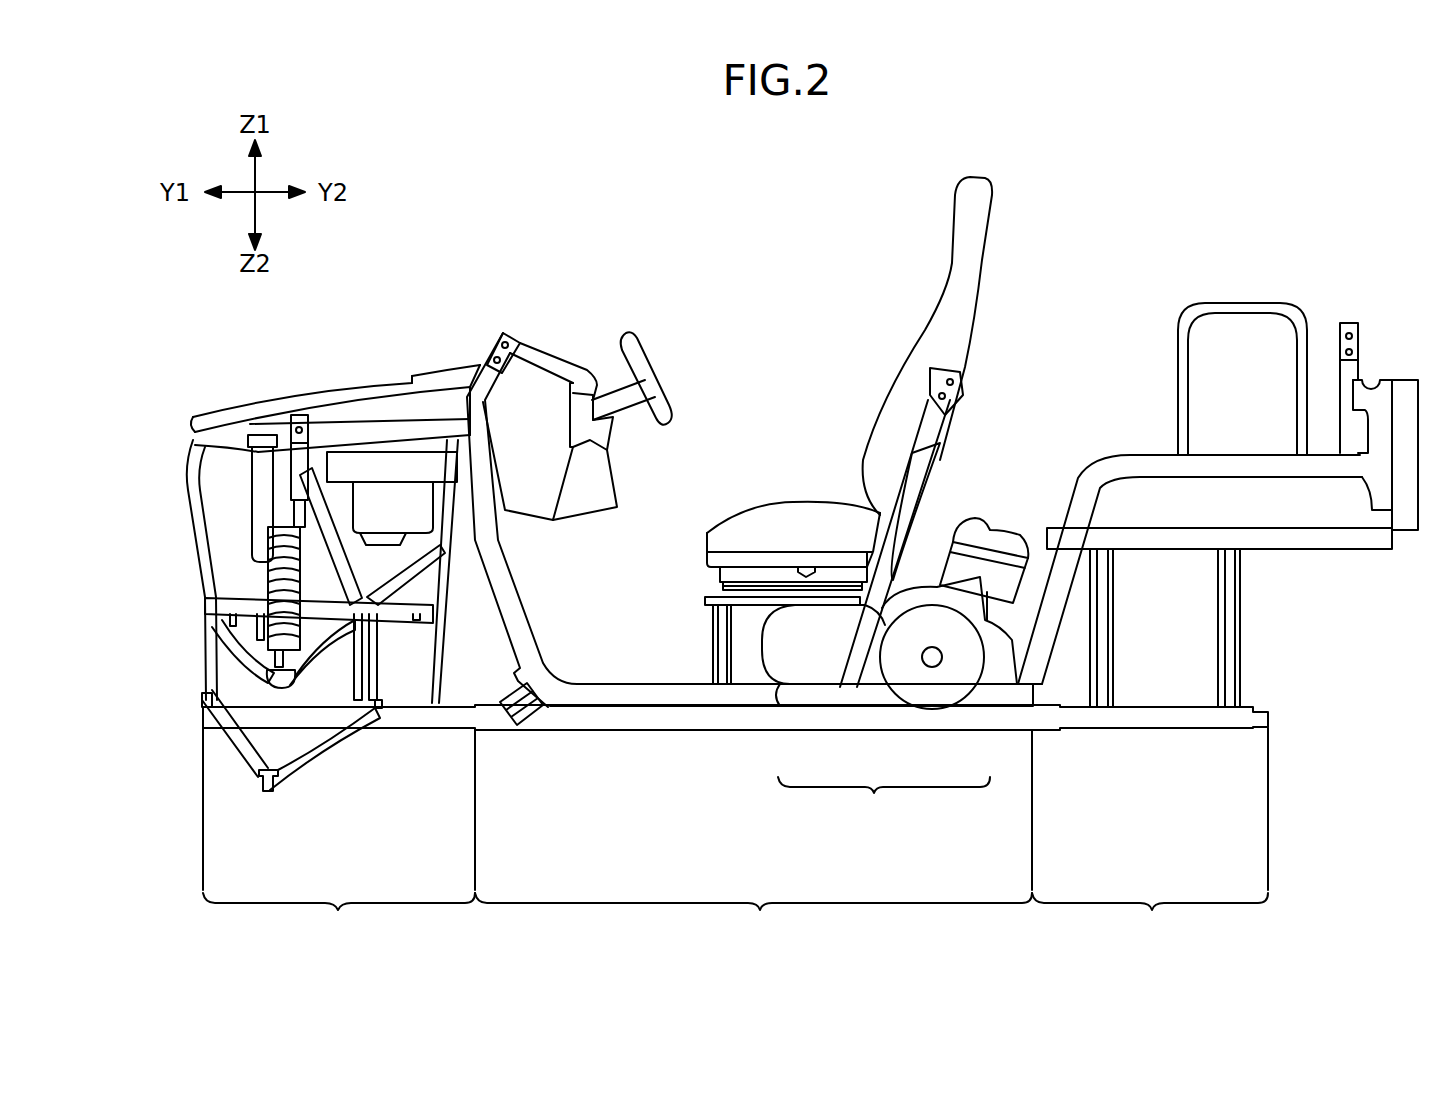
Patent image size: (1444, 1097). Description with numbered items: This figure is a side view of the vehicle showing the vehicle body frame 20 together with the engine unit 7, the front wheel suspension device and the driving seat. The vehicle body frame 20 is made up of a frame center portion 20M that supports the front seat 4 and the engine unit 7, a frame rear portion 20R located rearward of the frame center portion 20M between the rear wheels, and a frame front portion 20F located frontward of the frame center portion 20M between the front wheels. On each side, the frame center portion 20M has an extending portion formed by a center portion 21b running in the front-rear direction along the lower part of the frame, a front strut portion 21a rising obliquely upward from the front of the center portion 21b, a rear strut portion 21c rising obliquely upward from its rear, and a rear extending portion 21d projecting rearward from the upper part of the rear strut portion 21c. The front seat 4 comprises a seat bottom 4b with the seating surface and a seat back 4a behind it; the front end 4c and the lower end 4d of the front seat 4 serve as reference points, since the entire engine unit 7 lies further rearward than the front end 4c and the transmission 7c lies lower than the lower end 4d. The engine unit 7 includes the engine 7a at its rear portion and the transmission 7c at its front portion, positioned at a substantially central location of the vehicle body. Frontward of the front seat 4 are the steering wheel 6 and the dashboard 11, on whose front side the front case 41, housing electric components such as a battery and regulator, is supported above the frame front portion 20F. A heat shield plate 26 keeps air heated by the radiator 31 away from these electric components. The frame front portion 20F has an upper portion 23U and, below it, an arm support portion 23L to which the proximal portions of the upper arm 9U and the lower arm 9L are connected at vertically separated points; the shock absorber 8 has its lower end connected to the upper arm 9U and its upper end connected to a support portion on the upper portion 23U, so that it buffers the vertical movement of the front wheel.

The front seat 4 is at (905, 300).
The seat back 4a is at (915, 353).
The seat bottom 4b is at (770, 523).
The front end of the front seat 4c is at (705, 541).
The lower end of the front seat 4d is at (803, 570).
The steering wheel 6 is at (648, 352).
The engine unit 7 is at (884, 802).
The engine 7a is at (978, 580).
The transmission 7c is at (808, 700).
The shock absorber 8 is at (262, 555).
The lower arm 9L is at (318, 752).
The upper arm 9U is at (320, 638).
The dashboard 11 is at (555, 345).
The vehicle body frame 20 is at (625, 740).
The frame front portion 20F is at (339, 919).
The frame center portion 20M is at (753, 919).
The frame rear portion 20R is at (1150, 919).
The front strut portion 21a is at (520, 582).
The center portion 21b is at (650, 692).
The rear strut portion 21c is at (1048, 575).
The rear extending portion 21d is at (1238, 465).
The arm support portion 23L is at (195, 658).
The upper portion 23U is at (375, 410).
The heat shield plate 26 is at (345, 506).
The radiator 31 is at (262, 435).
The front case 41 is at (435, 388).